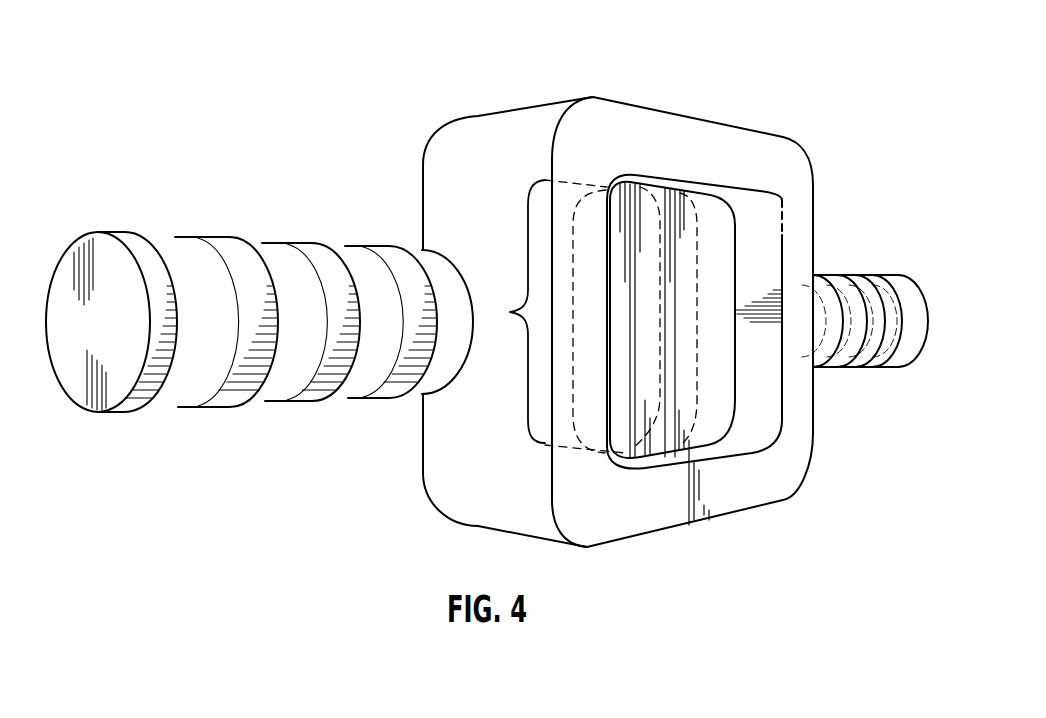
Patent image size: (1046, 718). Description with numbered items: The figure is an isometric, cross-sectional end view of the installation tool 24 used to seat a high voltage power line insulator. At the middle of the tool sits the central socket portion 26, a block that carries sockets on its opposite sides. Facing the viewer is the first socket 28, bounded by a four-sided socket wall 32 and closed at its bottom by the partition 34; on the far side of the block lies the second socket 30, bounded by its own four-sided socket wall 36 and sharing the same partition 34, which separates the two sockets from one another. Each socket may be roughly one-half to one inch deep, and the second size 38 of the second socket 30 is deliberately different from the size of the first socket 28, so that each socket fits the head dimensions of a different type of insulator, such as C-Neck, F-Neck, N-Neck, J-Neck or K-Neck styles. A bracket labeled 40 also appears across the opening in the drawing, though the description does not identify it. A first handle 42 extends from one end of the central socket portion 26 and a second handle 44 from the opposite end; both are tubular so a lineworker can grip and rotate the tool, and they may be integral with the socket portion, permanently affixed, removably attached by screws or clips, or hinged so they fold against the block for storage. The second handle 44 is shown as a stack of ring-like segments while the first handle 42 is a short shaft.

The installation tool 24 is at (330, 52).
The central socket portion 26 is at (617, 113).
The first socket 28 is at (753, 245).
The second socket 30 is at (630, 413).
The four-sided socket wall 32 is at (770, 273).
The partition 34 is at (700, 325).
The four-sided socket wall 36 is at (672, 428).
The second size 38 is at (782, 198).
The slot height 40 is at (511, 311).
The first handle 42 is at (882, 296).
The second handle 44 is at (186, 260).